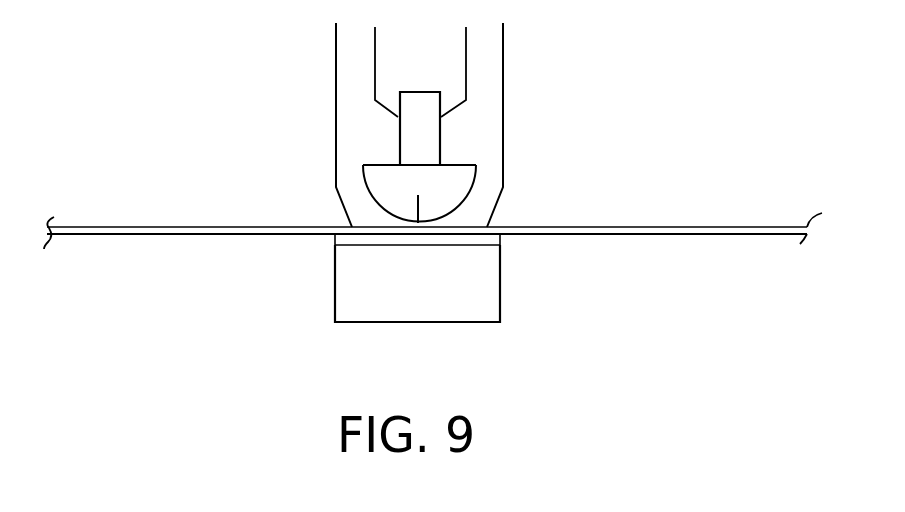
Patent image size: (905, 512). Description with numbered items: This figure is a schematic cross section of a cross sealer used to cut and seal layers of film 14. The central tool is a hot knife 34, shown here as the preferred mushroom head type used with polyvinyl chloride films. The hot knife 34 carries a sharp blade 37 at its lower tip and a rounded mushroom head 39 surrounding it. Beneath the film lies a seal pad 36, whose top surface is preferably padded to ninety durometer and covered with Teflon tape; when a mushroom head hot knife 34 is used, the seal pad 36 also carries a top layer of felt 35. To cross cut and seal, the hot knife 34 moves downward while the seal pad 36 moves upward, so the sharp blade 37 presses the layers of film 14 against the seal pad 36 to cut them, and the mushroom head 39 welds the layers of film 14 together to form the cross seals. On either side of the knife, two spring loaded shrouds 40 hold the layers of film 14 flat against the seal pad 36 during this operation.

The layers of film 14 is at (740, 227).
The hot knife 34 is at (418, 147).
The top layer of felt 35 is at (503, 238).
The seal pad 36 is at (477, 283).
The sharp blade 37 is at (420, 223).
The mushroom head 39 is at (382, 178).
The spring loaded shrouds 40 is at (336, 83).